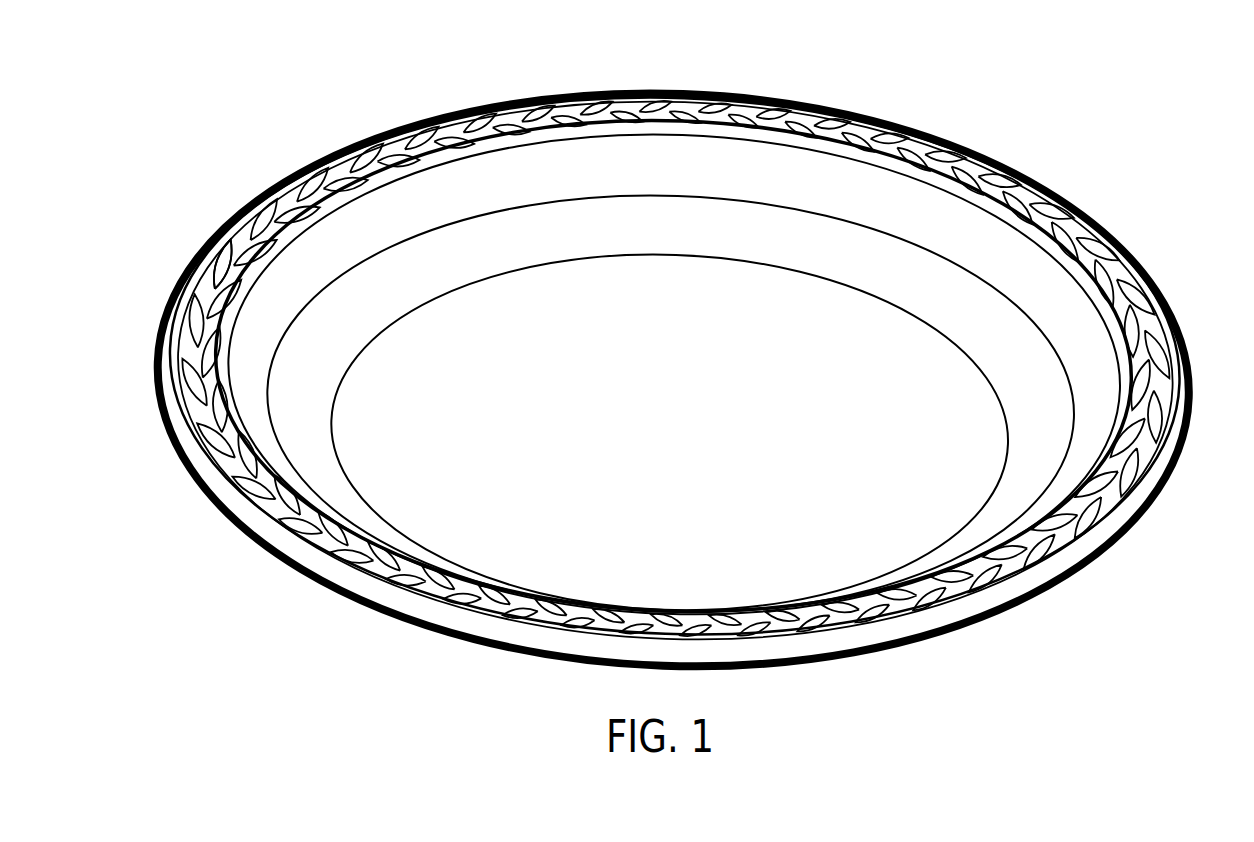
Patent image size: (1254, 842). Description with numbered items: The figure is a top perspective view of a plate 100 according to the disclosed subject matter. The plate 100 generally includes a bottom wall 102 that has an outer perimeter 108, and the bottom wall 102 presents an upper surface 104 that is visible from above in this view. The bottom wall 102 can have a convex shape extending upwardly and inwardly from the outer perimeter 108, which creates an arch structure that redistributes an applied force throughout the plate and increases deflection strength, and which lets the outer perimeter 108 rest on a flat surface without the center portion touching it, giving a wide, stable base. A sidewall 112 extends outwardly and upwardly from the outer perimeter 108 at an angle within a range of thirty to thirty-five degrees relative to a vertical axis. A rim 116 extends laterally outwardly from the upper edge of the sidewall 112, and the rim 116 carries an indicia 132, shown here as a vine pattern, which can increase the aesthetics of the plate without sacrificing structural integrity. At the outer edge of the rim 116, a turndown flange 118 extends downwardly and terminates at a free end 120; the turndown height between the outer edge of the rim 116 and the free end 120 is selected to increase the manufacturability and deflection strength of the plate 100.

The plate 100 is at (651, 352).
The bottom wall 102 is at (946, 402).
The upper surface 104 is at (686, 432).
The outer perimeter 108 is at (660, 255).
The sidewall 112 is at (450, 184).
The rim 116 is at (247, 232).
The turndown flange 118 is at (167, 340).
The free end 120 is at (160, 403).
The indicia 132 is at (215, 277).